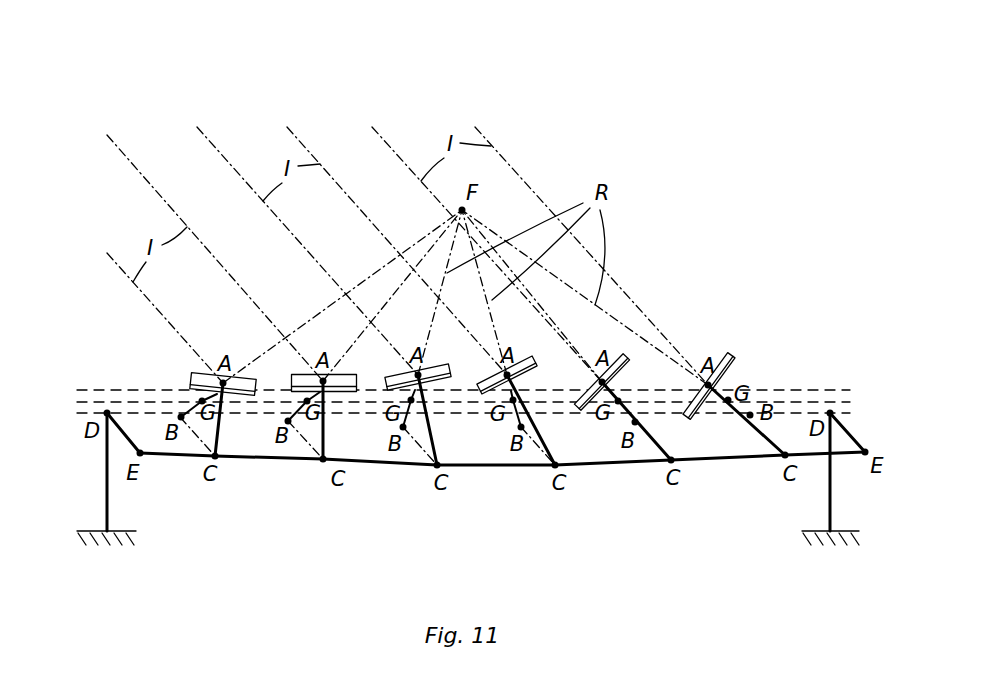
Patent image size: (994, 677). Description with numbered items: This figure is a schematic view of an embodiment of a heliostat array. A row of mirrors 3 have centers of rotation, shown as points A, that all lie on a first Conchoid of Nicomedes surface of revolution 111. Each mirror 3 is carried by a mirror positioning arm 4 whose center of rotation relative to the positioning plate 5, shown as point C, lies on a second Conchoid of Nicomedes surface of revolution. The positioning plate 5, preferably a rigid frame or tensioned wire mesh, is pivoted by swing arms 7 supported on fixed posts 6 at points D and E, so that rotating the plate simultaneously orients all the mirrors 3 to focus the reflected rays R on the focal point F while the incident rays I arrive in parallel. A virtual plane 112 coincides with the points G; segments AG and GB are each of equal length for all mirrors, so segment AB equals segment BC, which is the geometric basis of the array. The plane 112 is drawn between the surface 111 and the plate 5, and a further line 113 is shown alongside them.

The mirror 3 is at (630, 352).
The mirror positioning arm 4 is at (433, 416).
The positioning plate 5 is at (597, 468).
The fixed post 6 is at (105, 488).
The swing arm 7 is at (127, 428).
The first Conchoid of Nicomedes surface of revolution 111 is at (768, 394).
The virtual plane 112 is at (790, 405).
The third reference line 113 is at (810, 416).